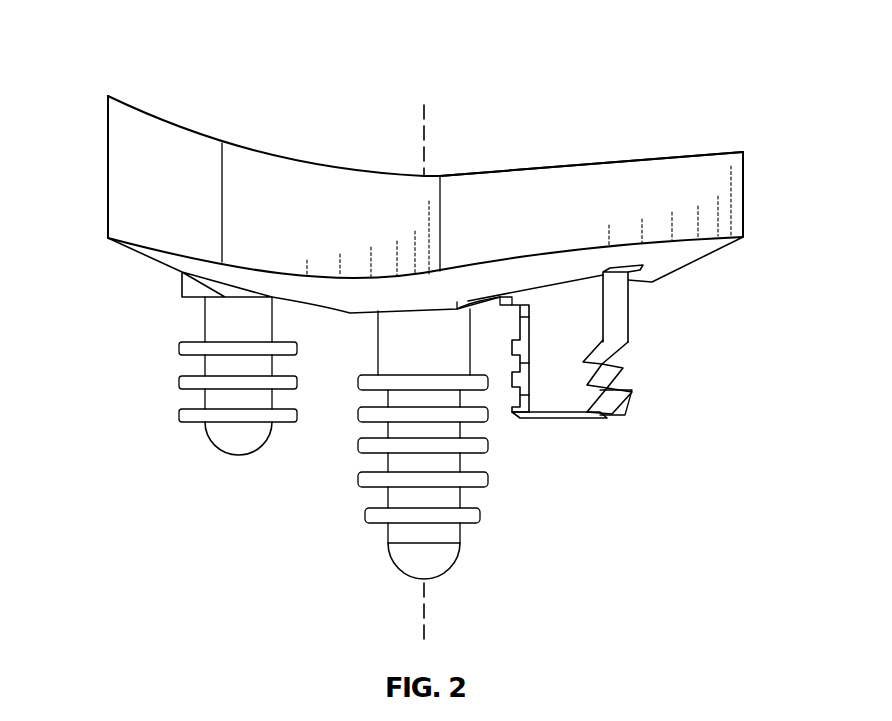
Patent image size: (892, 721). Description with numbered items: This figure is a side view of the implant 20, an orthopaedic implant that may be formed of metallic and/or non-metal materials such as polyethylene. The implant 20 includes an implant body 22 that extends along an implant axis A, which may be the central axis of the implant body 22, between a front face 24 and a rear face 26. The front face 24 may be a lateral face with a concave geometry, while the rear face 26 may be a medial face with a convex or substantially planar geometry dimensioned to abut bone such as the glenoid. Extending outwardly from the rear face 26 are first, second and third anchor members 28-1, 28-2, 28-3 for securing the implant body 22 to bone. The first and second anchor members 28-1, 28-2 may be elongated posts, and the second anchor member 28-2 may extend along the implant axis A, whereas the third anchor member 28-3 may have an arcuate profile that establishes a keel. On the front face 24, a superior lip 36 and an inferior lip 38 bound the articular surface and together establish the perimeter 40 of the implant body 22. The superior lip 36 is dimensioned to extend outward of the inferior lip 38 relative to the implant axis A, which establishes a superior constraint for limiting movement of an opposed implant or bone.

The implant 20 is at (143, 40).
The implant body 22 is at (108, 224).
The front face 24 is at (688, 152).
The rear face 26 is at (158, 252).
The first anchor member 28-1 is at (205, 433).
The second anchor member 28-2 is at (462, 534).
The third anchor member 28-3 is at (626, 411).
The superior lip 36 is at (108, 128).
The inferior lip 38 is at (745, 184).
The perimeter 40 is at (122, 181).
The implant axis A is at (425, 607).